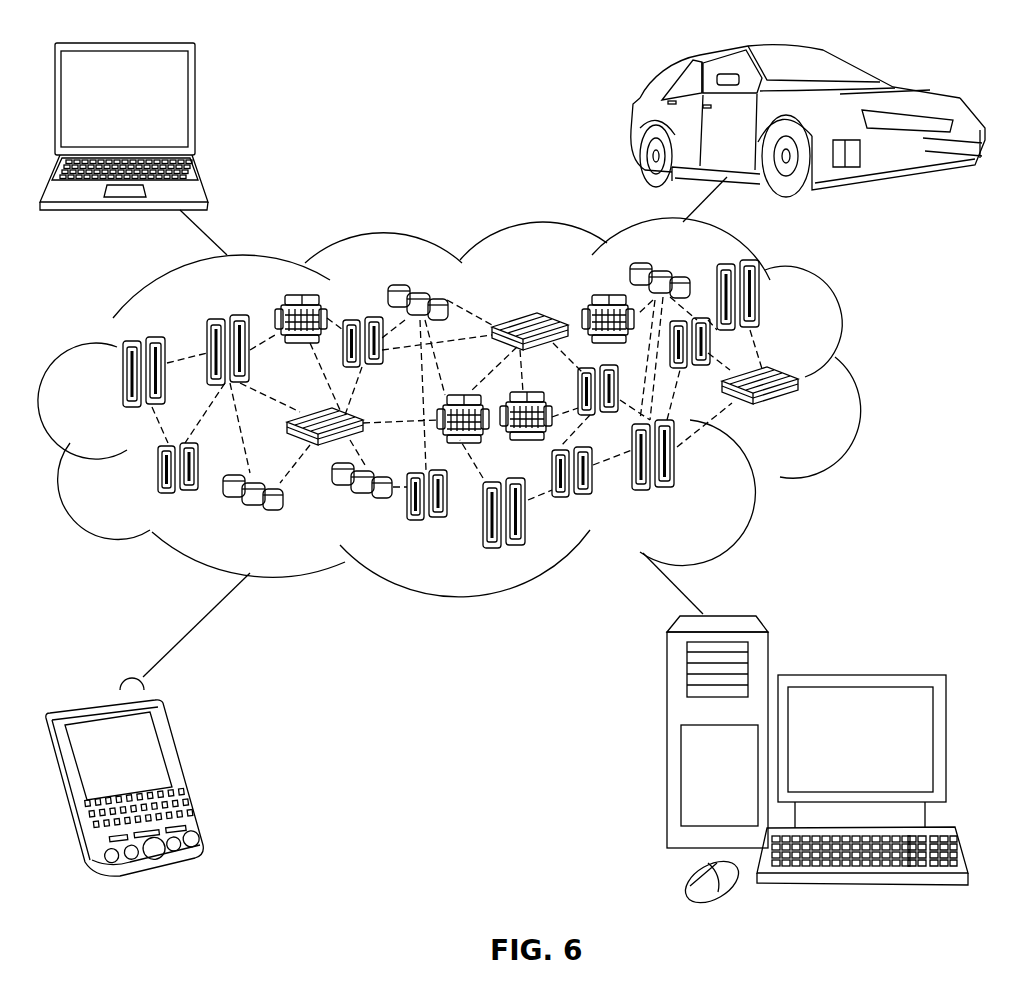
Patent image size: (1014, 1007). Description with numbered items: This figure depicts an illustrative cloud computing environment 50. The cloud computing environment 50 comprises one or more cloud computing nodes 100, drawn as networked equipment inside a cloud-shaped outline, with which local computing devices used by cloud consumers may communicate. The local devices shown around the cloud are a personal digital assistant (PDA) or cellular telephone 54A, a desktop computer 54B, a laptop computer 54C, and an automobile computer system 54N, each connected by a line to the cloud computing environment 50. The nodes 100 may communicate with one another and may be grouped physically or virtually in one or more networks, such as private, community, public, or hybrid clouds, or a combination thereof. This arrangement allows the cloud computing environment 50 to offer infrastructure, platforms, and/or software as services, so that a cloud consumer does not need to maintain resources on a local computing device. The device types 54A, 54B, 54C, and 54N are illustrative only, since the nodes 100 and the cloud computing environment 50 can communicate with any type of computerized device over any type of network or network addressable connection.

The personal digital assistant (PDA) or cellular telephone 54A is at (183, 768).
The desktop computer 54B is at (857, 673).
The laptop computer 54C is at (195, 106).
The automobile computer system 54N is at (635, 122).
The cloud computing environment 50 is at (857, 383).
The cloud computing nodes 100 is at (797, 411).